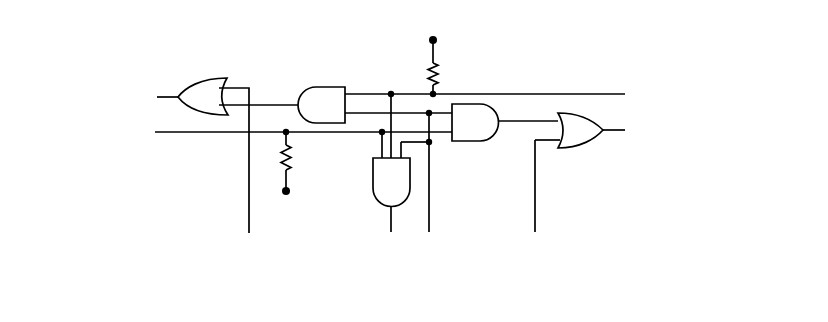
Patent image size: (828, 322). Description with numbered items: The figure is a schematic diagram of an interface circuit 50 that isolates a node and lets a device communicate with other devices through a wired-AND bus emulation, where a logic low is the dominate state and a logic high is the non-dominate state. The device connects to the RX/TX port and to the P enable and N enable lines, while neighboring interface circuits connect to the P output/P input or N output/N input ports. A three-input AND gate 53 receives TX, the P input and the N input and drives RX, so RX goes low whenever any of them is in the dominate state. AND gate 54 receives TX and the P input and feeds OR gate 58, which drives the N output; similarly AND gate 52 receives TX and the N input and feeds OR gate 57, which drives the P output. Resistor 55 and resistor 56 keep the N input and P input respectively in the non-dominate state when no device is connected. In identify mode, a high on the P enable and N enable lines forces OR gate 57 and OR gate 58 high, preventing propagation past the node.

The interface circuit 50 is at (347, 46).
The AND gate 52 is at (342, 84).
The AND gate 53 is at (370, 173).
The AND gate 54 is at (467, 142).
The resistor 55 is at (430, 68).
The resistor 56 is at (292, 152).
The OR gate 57 is at (213, 76).
The OR gate 58 is at (573, 150).